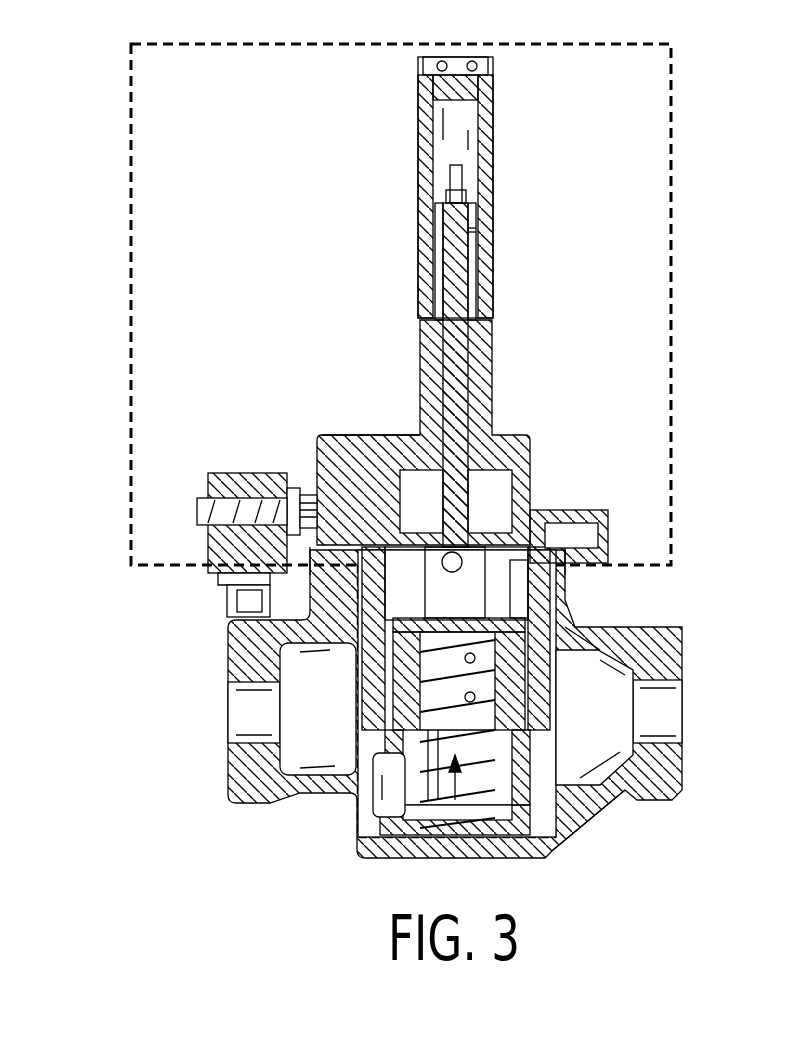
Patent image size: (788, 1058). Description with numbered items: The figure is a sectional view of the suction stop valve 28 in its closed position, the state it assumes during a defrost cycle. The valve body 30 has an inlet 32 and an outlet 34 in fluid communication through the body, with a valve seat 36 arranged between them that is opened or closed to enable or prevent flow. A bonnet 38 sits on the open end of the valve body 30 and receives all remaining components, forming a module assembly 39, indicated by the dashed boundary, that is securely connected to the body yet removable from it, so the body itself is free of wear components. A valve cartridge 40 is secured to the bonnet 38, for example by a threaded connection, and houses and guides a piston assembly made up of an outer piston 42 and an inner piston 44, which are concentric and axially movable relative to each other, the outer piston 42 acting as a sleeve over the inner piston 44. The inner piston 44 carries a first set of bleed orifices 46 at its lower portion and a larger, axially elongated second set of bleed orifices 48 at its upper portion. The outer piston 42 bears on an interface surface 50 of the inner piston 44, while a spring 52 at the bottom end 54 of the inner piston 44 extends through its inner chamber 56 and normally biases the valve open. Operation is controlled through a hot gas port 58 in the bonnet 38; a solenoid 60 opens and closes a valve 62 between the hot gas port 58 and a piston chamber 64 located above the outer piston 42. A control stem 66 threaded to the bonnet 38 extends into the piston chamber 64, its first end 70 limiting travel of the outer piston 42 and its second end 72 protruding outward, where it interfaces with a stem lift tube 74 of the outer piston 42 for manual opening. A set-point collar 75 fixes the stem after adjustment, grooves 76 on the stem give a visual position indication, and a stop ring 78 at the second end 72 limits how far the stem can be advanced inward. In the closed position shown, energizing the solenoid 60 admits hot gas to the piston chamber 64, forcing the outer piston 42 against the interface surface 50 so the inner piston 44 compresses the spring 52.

The valve 28 is at (335, 200).
The valve body 30 is at (672, 780).
The inlet 32 is at (670, 725).
The outlet 34 is at (243, 717).
The valve seat 36 is at (612, 800).
The bonnet 38 is at (513, 443).
The module assembly 39 is at (672, 362).
The valve cartridge 40 is at (585, 650).
The outer piston 42 is at (530, 598).
The inner piston 44 is at (575, 688).
The first set of bleed orifices 46 is at (567, 710).
The second set of bleed orifices 48 is at (605, 628).
The interface surface 50 is at (380, 720).
The spring 52 is at (484, 795).
The bottom end 54 is at (398, 813).
The inner chamber 56 is at (452, 805).
The hot gas port 58 is at (352, 447).
The solenoid 60 is at (200, 508).
The valve 62 is at (283, 492).
The piston chamber 64 is at (555, 545).
The control stem 66 is at (452, 357).
The first end 70 is at (425, 455).
The second end 72 is at (462, 247).
The stem lift tube 74 is at (516, 560).
The set-point collar 75 is at (478, 213).
The grooves 76 is at (478, 229).
The stop ring 78 is at (482, 188).